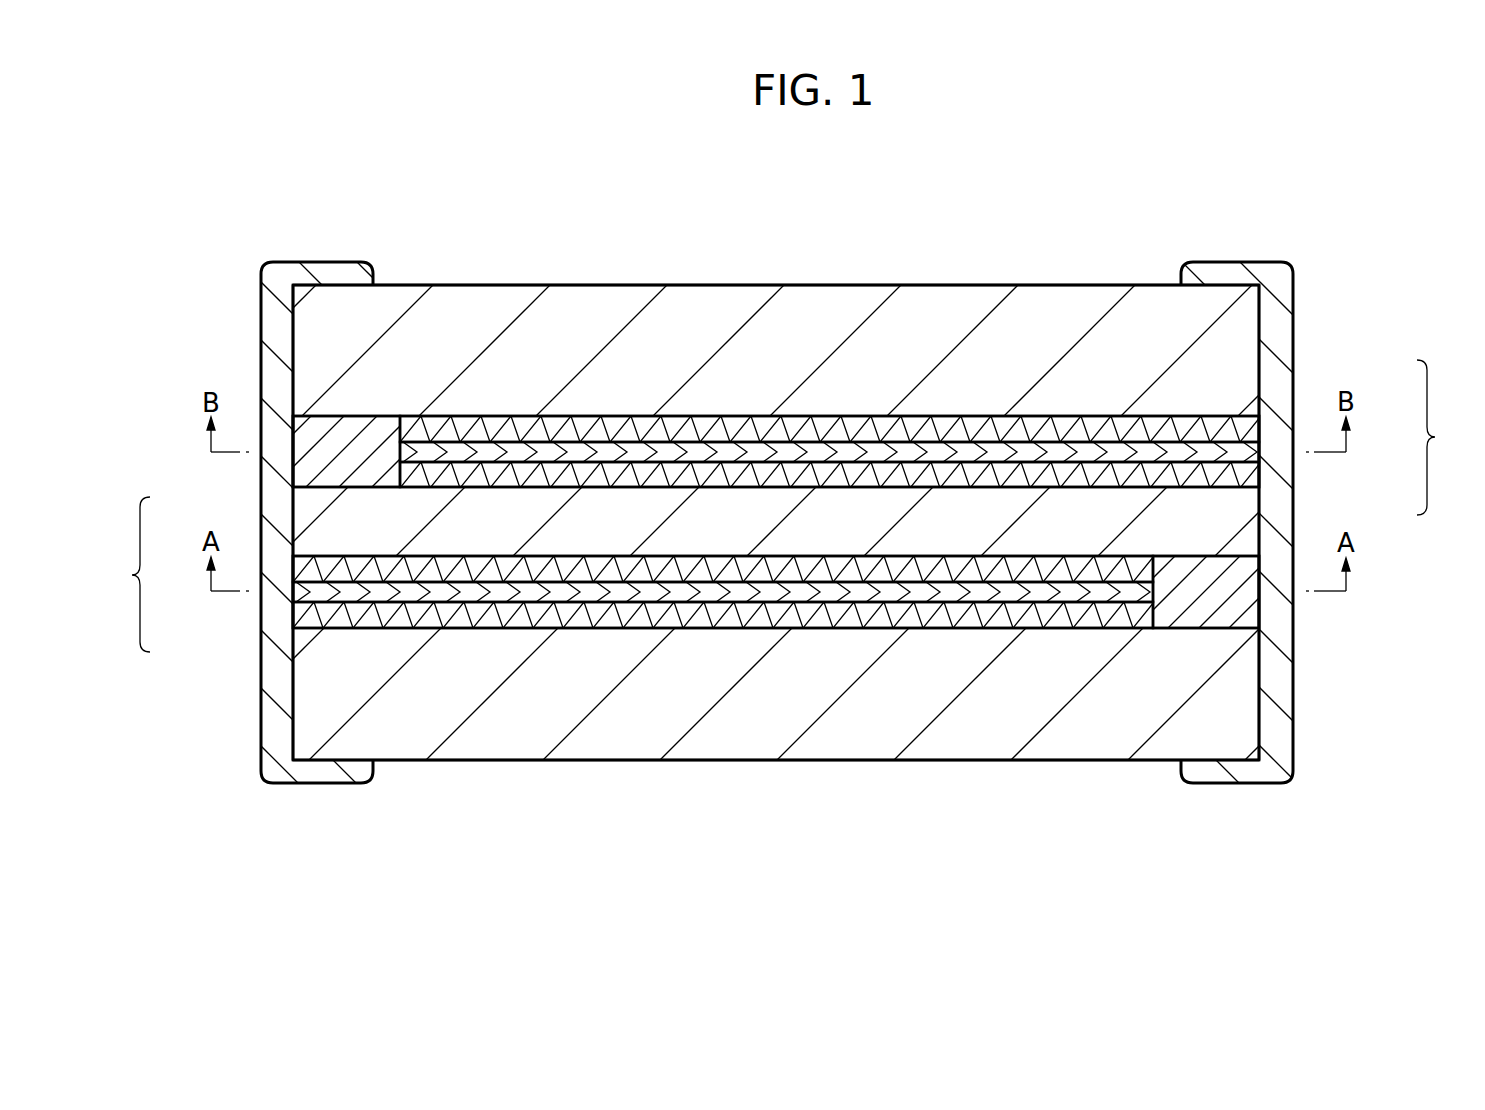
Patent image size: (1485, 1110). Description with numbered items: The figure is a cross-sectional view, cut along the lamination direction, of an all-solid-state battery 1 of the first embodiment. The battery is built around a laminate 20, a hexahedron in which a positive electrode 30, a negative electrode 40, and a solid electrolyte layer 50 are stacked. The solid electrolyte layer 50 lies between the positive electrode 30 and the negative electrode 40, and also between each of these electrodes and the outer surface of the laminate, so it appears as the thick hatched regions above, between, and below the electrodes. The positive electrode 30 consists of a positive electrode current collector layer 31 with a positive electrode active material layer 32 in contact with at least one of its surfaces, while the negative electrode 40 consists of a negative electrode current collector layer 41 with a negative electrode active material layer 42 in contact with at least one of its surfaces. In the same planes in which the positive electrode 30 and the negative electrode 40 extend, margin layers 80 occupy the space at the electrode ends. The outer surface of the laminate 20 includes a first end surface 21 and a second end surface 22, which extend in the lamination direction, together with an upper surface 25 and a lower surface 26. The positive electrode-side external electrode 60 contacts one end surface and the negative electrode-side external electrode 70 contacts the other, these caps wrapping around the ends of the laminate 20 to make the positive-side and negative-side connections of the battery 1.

The all-solid-state battery 1 is at (867, 262).
The laminate 20 is at (440, 280).
The first end surface 21 is at (292, 320).
The second end surface 22 is at (1260, 720).
The upper surface 25 is at (627, 285).
The lower surface 26 is at (597, 762).
The positive electrode 30 is at (679, 574).
The positive electrode current collector layer 31 is at (300, 595).
The positive electrode active material layer 32 is at (300, 565).
The negative electrode 40 is at (886, 437).
The negative electrode current collector layer 41 is at (1250, 451).
The negative electrode active material layer 42 is at (1250, 428).
The solid electrolyte layer 50 is at (312, 520).
The positive electrode-side external electrode 60 is at (275, 730).
The negative electrode-side external electrode 70 is at (1277, 742).
The margin layer 80 is at (328, 433).